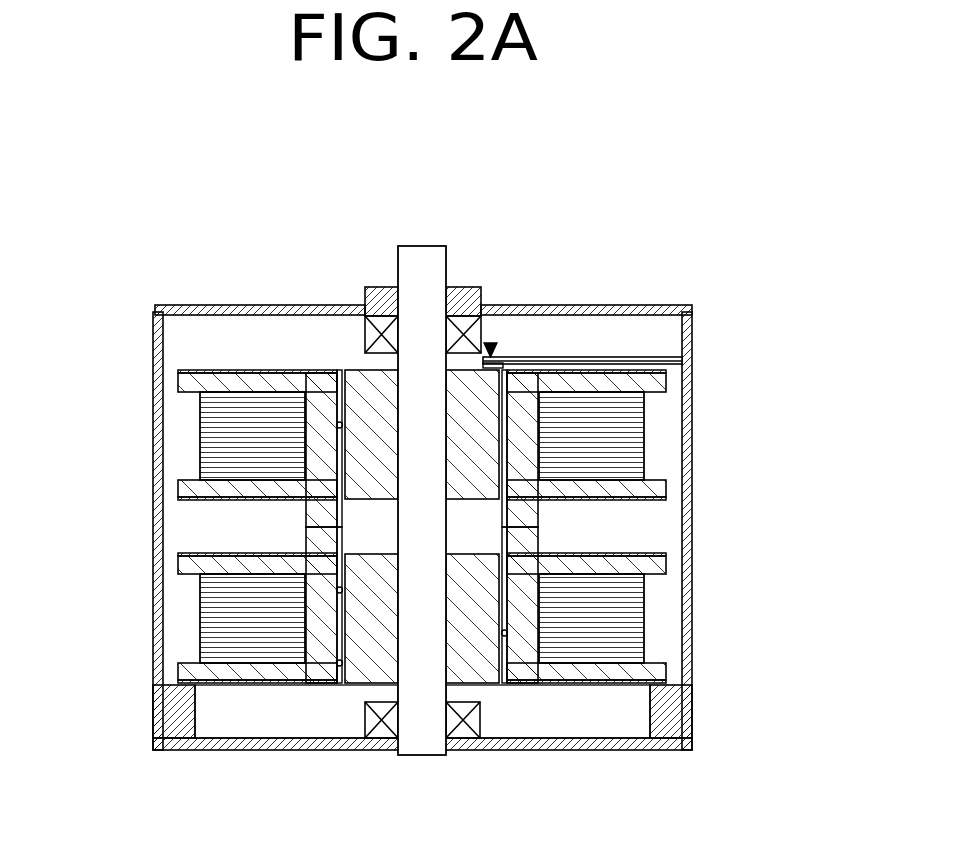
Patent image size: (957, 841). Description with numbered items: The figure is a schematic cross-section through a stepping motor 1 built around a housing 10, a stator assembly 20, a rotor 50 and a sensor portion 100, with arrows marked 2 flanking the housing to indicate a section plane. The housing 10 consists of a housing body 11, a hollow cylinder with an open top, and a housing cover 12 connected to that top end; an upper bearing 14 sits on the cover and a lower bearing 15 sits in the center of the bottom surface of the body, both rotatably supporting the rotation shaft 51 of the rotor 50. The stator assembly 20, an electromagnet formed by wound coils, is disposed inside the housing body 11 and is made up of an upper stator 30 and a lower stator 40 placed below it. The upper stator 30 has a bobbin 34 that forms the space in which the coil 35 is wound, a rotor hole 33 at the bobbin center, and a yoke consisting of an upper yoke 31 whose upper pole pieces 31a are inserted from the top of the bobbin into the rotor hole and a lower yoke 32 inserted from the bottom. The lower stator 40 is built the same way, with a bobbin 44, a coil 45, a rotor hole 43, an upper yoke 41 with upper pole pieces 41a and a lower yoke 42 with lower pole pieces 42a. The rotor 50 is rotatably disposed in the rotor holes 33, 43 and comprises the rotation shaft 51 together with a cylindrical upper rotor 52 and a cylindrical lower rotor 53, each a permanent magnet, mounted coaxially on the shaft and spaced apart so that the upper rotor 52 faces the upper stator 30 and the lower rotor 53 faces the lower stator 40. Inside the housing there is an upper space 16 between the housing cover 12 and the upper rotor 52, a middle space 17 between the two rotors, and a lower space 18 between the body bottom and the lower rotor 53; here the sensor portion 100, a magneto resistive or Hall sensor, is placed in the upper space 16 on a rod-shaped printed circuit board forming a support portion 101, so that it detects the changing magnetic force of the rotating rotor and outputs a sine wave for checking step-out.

The stepping motor 1 is at (676, 141).
The section line 2 is at (142, 360).
The housing 10 is at (140, 226).
The housing body 11 is at (151, 333).
The housing cover 12 is at (207, 305).
The upper bearing 14 is at (364, 334).
The lower bearing 15 is at (366, 712).
The upper space 16 is at (200, 347).
The middle space 17 is at (191, 528).
The lower space 18 is at (226, 714).
The stator assembly 20 is at (800, 465).
The upper stator 30 is at (730, 378).
The upper yoke 31 is at (667, 372).
The upper pole pieces 31a is at (336, 426).
The lower yoke 32 is at (667, 500).
The rotor hole 33 is at (338, 372).
The bobbin 34 is at (667, 489).
The coil 35 is at (640, 450).
The lower stator 40 is at (728, 560).
The upper yoke 41 is at (667, 555).
The upper pole pieces 41a is at (336, 591).
The lower yoke 42 is at (667, 683).
The lower pole pieces 42a is at (506, 637).
The rotor hole 43 is at (340, 686).
The bobbin 44 is at (667, 671).
The coil 45 is at (640, 634).
The rotor 50 is at (449, 489).
The rotation shaft 51 is at (440, 246).
The upper rotor 52 is at (493, 385).
The lower rotor 53 is at (490, 681).
The sensor portion 100 is at (491, 343).
The support portion 101 is at (623, 356).